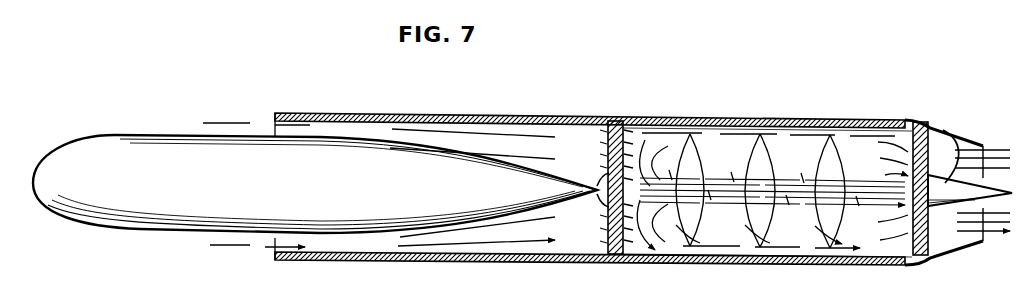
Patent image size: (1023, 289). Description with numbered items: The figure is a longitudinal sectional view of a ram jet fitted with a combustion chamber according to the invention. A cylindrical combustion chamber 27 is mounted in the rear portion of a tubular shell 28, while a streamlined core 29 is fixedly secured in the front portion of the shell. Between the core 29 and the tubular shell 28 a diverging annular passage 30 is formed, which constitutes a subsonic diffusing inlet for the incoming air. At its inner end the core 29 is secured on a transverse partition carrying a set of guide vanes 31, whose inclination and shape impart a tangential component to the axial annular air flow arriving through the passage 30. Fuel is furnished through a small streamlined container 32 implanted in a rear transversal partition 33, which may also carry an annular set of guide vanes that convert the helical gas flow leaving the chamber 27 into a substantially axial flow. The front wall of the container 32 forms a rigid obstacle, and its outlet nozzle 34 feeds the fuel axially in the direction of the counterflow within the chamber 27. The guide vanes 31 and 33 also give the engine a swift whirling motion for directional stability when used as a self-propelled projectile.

The cylindrical combustion chamber 27 is at (752, 133).
The tubular shell 28 is at (640, 122).
The streamlined core 29 is at (189, 138).
The diverging annular passage 30 is at (361, 134).
The set of guide vanes 31 is at (613, 120).
The streamlined container 32 is at (943, 130).
The rear transversal partition 33 is at (910, 122).
The outlet nozzle 34 is at (905, 195).